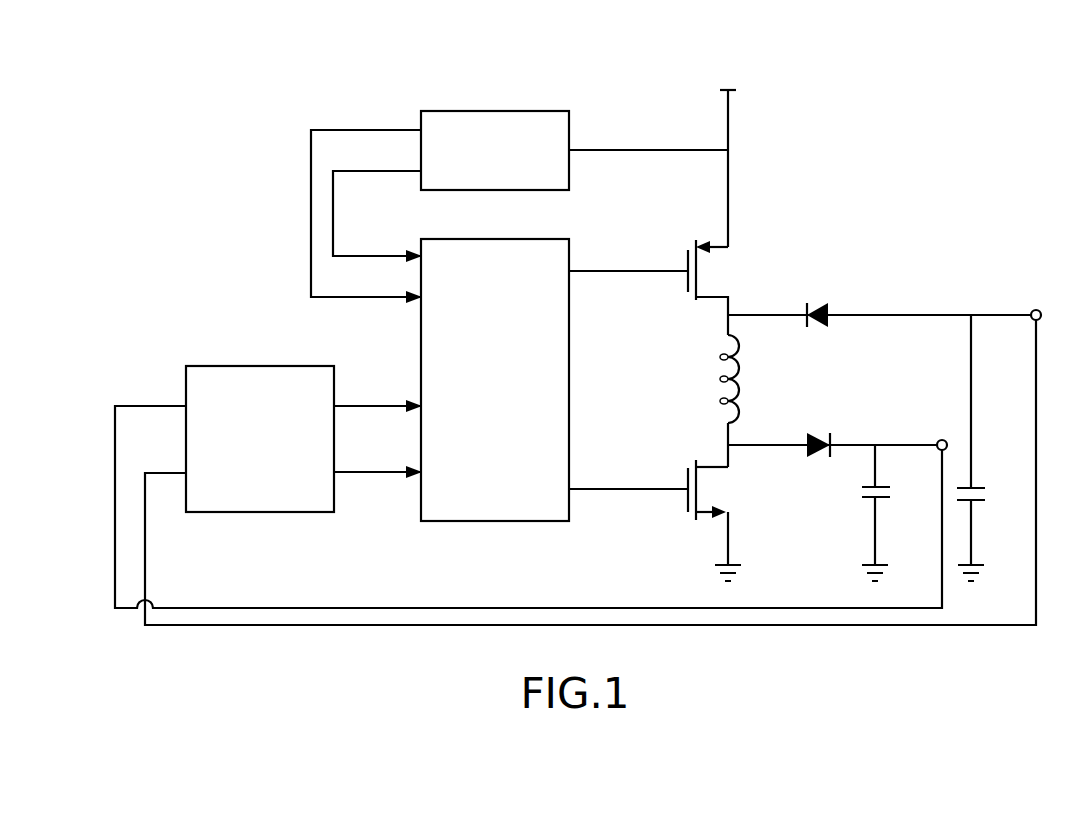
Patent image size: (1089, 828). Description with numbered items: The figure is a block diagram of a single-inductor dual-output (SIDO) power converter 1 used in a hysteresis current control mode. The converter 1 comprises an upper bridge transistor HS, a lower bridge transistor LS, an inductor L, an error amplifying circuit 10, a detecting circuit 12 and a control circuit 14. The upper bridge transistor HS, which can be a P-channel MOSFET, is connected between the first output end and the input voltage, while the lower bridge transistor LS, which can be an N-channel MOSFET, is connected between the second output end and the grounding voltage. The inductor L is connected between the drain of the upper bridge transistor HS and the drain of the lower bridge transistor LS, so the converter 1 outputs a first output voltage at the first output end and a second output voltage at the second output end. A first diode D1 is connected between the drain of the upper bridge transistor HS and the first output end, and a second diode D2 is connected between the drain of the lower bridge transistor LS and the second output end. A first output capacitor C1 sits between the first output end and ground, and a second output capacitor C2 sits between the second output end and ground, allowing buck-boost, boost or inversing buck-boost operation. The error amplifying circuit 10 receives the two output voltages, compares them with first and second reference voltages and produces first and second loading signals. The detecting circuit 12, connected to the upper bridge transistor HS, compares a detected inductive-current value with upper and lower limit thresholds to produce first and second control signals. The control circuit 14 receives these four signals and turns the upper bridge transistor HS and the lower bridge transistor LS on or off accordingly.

The single-inductor dual-output power converter 1 is at (143, 68).
The error amplifying circuit 10 is at (260, 366).
The detecting circuit 12 is at (495, 111).
The control circuit 14 is at (569, 381).
The upper bridge transistor HS is at (667, 287).
The lower bridge transistor LS is at (664, 512).
The inductor L is at (739, 401).
The first diode D1 is at (882, 301).
The second diode D2 is at (835, 431).
The first output capacitor C1 is at (987, 448).
The second output capacitor C2 is at (892, 513).